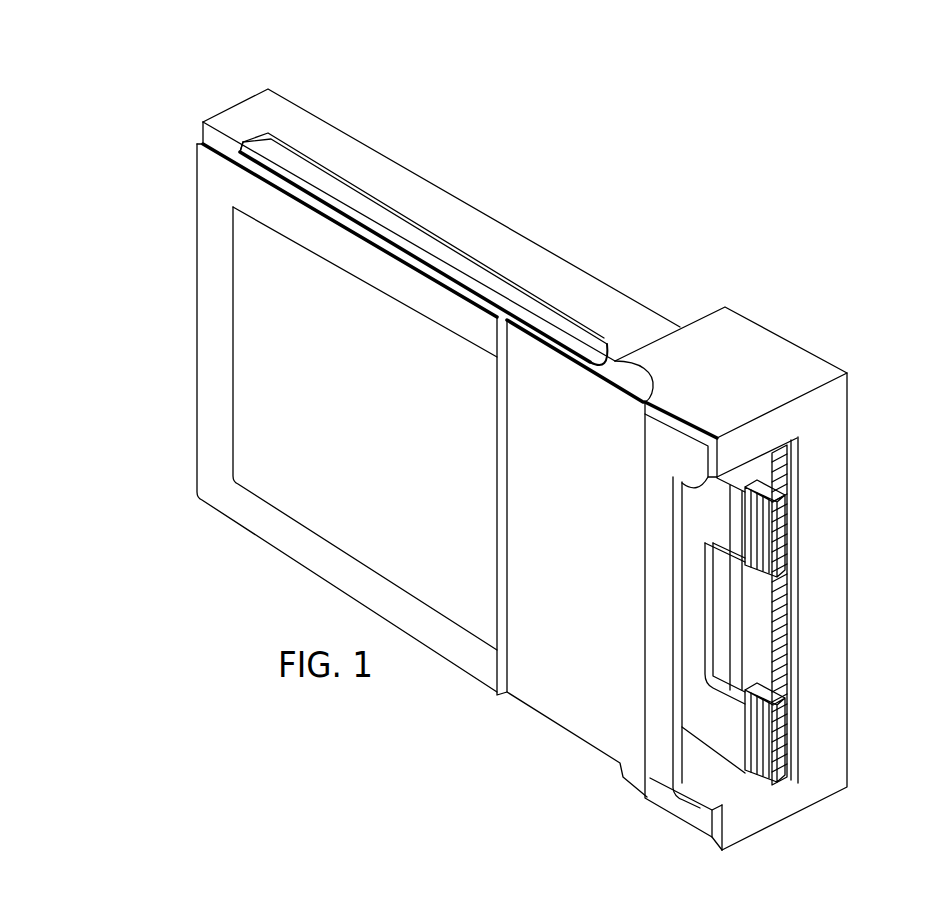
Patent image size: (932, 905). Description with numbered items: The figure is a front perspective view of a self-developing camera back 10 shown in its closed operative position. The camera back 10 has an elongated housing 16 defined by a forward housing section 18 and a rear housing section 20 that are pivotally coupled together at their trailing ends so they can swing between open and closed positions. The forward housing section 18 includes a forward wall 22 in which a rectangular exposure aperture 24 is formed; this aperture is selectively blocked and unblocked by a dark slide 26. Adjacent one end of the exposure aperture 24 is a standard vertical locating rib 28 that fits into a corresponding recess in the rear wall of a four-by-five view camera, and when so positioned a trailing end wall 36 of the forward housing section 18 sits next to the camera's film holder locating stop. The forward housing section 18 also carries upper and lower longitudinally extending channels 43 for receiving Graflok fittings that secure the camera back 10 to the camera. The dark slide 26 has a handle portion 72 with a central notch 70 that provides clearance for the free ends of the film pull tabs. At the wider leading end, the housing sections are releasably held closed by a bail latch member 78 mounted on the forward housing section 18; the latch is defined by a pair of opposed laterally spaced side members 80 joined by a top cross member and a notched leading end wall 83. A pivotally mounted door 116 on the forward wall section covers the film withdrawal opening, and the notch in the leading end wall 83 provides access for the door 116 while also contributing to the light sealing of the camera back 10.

The self-developing camera back 10 is at (802, 265).
The elongated housing 16 is at (680, 316).
The forward housing section 18 is at (287, 158).
The rear housing section 20 is at (509, 233).
The forward wall 22 is at (549, 690).
The rectangular exposure aperture 24 is at (254, 470).
The dark slide 26 is at (333, 421).
The vertical locating rib 28 is at (505, 433).
The trailing end wall 36 is at (196, 233).
The longitudinally extending channels 43 is at (378, 230).
The central notch 70 is at (726, 665).
The handle portion 72 is at (723, 732).
The bail latch member 78 is at (856, 367).
The side members 80 is at (731, 372).
The notched leading end wall 83 is at (836, 545).
The door 116 is at (783, 608).